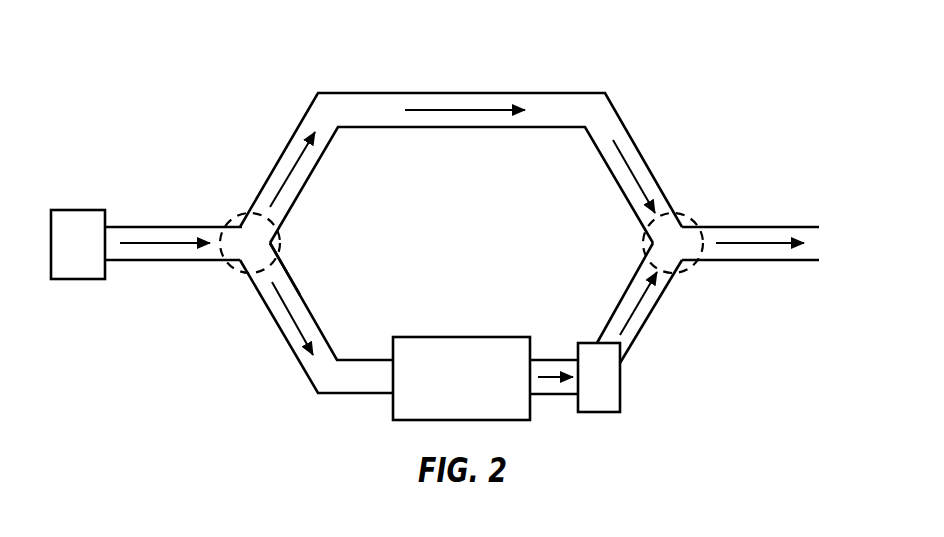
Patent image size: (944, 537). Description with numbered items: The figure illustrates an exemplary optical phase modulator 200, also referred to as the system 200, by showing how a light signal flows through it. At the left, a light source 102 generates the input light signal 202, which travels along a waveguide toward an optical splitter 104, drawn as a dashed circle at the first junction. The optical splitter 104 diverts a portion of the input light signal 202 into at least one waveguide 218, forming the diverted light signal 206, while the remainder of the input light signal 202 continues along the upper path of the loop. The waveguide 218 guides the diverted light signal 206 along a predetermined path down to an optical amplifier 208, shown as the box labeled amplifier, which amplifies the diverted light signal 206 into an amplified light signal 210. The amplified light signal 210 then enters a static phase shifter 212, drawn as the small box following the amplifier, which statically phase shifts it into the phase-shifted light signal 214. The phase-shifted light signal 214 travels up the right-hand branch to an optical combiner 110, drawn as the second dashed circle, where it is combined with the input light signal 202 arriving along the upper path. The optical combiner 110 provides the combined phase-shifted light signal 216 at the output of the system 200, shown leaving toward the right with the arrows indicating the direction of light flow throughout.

The optical phase modulator 200 is at (668, 39).
The light source 102 is at (78, 210).
The optical splitter 104 is at (233, 268).
The optical combiner 110 is at (686, 270).
The input light signal 202 is at (160, 242).
The diverted light signal 206 is at (290, 315).
The optical amplifier 208 is at (495, 337).
The amplified light signal 210 is at (552, 382).
The static phase shifter 212 is at (613, 412).
The phase-shifted light signal 214 is at (632, 313).
The combined phase-shifted light signal 216 is at (763, 243).
The waveguide 218 is at (290, 277).